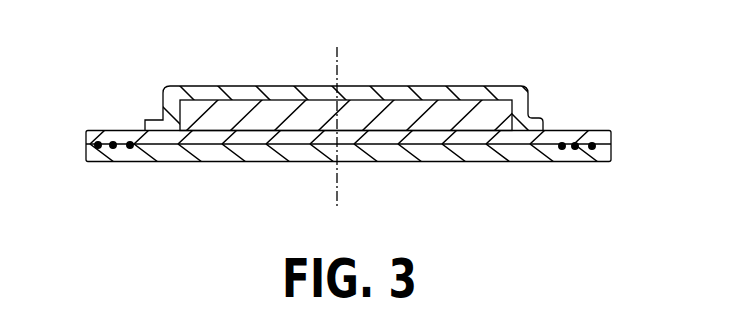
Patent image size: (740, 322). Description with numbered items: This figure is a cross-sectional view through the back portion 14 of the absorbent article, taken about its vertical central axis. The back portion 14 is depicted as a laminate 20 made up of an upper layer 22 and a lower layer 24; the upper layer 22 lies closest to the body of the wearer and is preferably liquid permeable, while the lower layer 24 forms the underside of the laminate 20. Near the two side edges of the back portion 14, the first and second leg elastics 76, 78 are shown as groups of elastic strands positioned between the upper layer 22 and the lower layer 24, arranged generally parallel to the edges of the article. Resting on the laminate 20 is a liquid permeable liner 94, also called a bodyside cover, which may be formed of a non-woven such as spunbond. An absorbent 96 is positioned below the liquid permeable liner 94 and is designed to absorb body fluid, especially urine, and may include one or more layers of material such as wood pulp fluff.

The back portion 14 is at (366, 124).
The laminate 20 is at (366, 138).
The upper layer 22 is at (554, 138).
The lower layer 24 is at (536, 163).
The first leg elastic 76 is at (130, 145).
The second leg elastic 78 is at (592, 146).
The liquid permeable liner 94 is at (439, 86).
The absorbent 96 is at (262, 110).